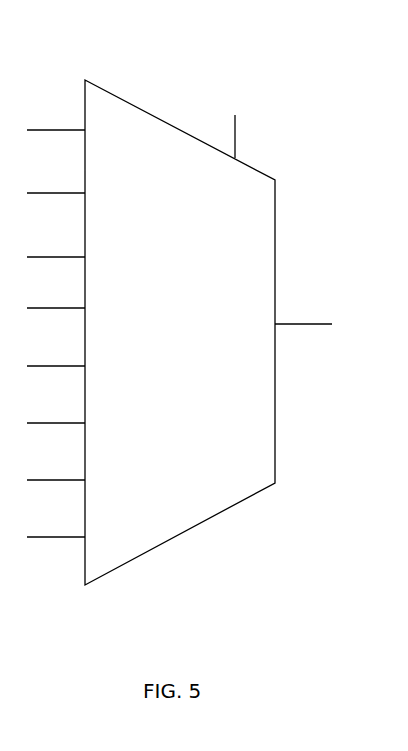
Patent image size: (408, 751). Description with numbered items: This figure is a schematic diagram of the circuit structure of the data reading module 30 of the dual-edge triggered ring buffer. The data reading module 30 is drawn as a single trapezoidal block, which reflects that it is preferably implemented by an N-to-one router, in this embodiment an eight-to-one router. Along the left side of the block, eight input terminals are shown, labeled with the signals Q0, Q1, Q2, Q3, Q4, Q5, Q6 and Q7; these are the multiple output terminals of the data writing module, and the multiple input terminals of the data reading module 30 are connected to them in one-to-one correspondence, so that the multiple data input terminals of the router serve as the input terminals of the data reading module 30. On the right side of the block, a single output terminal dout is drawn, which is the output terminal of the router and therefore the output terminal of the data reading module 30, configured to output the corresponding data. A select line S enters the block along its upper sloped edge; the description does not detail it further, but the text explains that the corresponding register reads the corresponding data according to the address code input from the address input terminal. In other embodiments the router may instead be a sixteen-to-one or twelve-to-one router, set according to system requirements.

The data reading module 30 is at (141, 108).
The output terminal Q0 is at (56, 113).
The output terminal Q1 is at (56, 174).
The output terminal Q2 is at (56, 238).
The output terminal Q3 is at (56, 290).
The output terminal Q4 is at (56, 348).
The output terminal Q5 is at (56, 404).
The output terminal Q6 is at (56, 460).
The output terminal Q7 is at (56, 520).
The select signal S[3:0] S is at (226, 123).
The output terminal dout is at (304, 311).